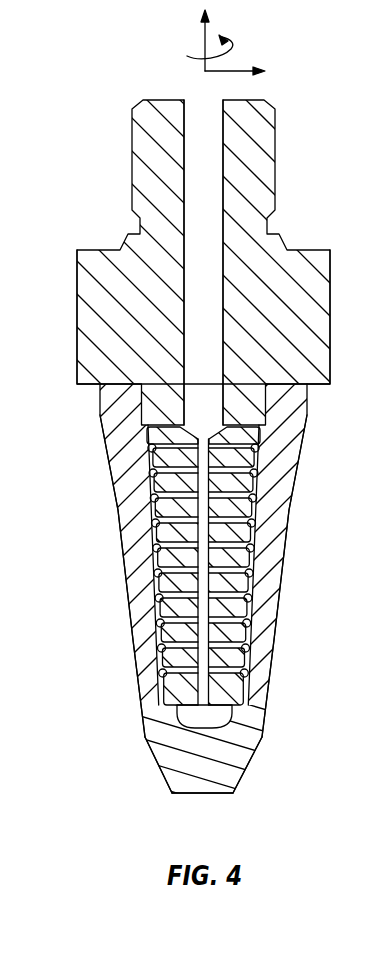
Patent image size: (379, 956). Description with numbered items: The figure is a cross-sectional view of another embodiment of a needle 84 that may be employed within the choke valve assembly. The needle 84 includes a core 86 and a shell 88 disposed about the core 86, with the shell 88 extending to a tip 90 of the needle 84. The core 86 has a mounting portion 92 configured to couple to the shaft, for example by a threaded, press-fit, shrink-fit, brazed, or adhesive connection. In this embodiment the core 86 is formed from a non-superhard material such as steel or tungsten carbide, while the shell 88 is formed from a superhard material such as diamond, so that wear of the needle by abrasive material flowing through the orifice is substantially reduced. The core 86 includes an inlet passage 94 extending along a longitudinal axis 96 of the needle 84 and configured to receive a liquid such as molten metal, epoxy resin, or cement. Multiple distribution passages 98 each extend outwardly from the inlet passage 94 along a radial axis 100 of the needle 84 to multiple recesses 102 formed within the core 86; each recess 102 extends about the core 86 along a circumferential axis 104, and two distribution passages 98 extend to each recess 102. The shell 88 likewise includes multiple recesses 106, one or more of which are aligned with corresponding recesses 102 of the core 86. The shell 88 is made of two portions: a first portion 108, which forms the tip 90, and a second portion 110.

The needle 84 is at (90, 551).
The core 86 is at (290, 268).
The shell 88 is at (298, 676).
The tip 90 is at (207, 793).
The mounting portion 92 is at (275, 159).
The inlet passage 94 is at (168, 162).
The longitudinal axis 96 is at (205, 47).
The distribution passages 98 is at (158, 449).
The radial axis 100 is at (232, 71).
The recesses 102 is at (148, 492).
The circumferential axis 104 is at (236, 48).
The recesses 106 is at (262, 510).
The first portion 108 is at (158, 698).
The second portion 110 is at (283, 452).